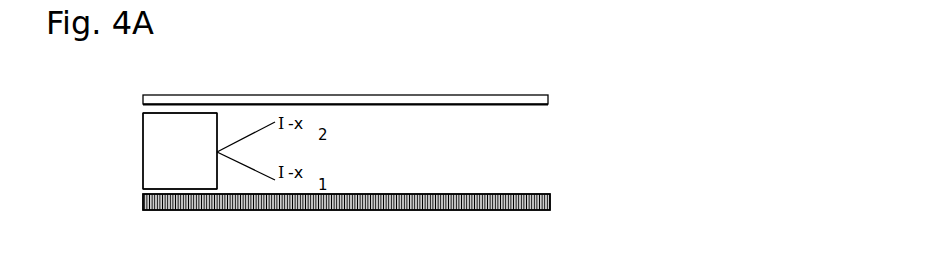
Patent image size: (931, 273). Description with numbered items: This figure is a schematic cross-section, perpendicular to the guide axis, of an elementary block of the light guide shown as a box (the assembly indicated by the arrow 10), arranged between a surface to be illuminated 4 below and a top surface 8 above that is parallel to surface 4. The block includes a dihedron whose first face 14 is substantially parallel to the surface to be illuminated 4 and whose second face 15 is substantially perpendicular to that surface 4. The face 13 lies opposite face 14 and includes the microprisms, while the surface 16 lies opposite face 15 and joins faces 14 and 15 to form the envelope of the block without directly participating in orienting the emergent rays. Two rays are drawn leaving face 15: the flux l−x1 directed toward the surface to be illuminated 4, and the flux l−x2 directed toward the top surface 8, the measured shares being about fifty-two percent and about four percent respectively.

The surface to be illuminated 4 is at (463, 210).
The top surface 8 is at (472, 94).
The sensor assembly 10 is at (111, 154).
The face 13 is at (174, 189).
The first face 14 is at (197, 112).
The second face 15 is at (217, 126).
The surface 16 is at (143, 135).